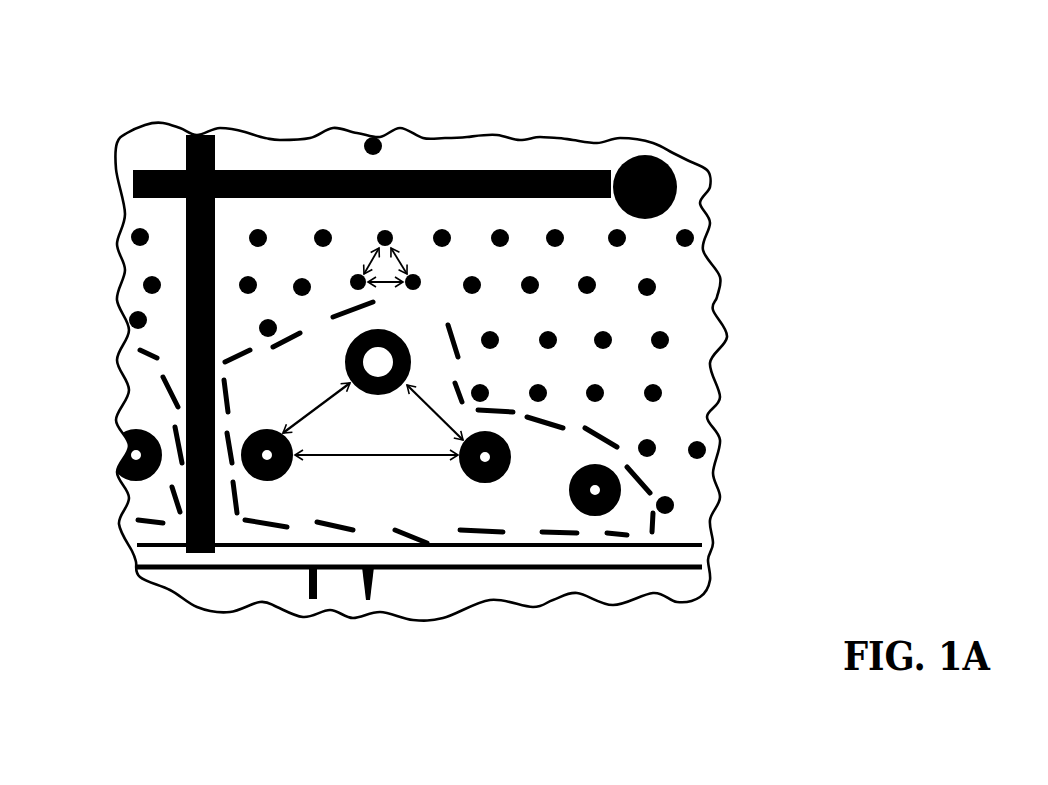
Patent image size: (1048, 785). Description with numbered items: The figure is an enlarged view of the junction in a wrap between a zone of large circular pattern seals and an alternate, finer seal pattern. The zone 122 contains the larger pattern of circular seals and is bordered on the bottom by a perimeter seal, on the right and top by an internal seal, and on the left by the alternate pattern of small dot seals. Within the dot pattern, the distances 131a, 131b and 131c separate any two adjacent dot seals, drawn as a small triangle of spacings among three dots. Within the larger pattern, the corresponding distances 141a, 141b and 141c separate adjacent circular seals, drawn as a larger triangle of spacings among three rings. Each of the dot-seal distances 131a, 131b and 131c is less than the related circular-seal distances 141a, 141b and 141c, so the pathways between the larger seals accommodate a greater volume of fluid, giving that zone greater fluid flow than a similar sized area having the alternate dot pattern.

The zone 122 is at (537, 512).
The distance between adjacent dot seals 131a is at (370, 255).
The distance between adjacent dot seals 131b is at (410, 257).
The distance between adjacent dot seals 131c is at (440, 313).
The distance between adjacent pattern seals 141a is at (303, 427).
The distance between adjacent pattern seals 141b is at (440, 410).
The distance between adjacent pattern seals 141c is at (377, 457).